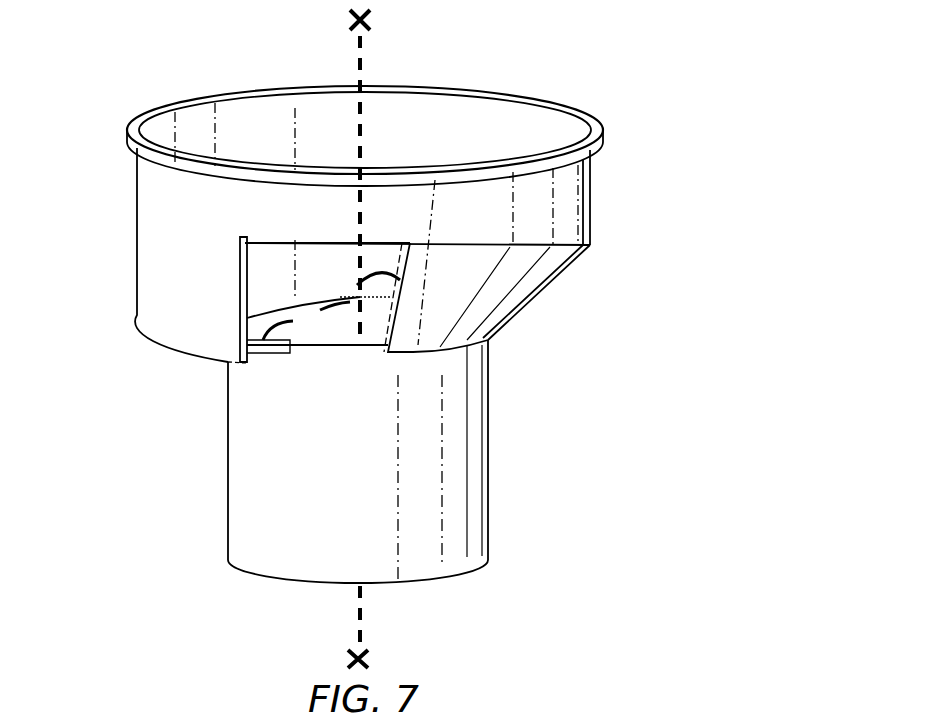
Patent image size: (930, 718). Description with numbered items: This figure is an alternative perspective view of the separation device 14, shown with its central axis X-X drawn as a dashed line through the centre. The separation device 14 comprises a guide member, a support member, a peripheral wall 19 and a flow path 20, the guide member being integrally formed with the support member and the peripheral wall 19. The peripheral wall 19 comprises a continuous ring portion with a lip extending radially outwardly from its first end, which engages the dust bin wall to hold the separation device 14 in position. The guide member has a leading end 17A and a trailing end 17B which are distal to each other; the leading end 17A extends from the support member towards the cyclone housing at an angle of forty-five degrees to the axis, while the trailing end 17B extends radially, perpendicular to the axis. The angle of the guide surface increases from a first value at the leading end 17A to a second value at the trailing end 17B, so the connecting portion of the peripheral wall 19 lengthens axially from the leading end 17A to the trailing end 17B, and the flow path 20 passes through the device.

The separation device 14 is at (333, 337).
The peripheral wall 19 is at (137, 206).
The leading end 17A is at (395, 312).
The trailing end 17B is at (268, 352).
The flow path 20 is at (320, 343).